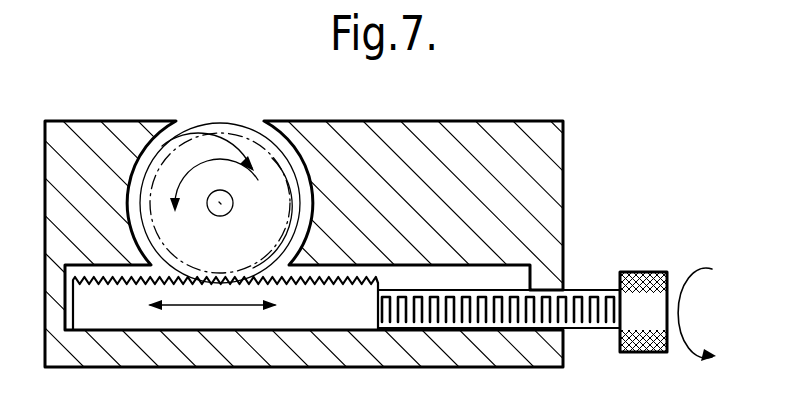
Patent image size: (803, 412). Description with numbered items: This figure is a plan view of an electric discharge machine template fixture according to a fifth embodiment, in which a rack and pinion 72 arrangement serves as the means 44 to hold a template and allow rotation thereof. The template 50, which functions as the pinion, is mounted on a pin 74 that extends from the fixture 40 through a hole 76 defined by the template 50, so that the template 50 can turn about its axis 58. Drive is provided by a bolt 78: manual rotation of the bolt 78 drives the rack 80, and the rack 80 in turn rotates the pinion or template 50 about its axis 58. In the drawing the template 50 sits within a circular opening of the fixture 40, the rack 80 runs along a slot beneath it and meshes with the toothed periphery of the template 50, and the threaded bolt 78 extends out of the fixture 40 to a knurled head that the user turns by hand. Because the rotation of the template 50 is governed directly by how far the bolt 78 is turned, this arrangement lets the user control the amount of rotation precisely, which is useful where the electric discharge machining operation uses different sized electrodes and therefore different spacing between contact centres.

The fixture 40 is at (401, 241).
The means to hold a template and allow rotation thereof 44 is at (401, 241).
The template 50 is at (167, 177).
The axis 58 is at (217, 216).
The rack and pinion 72 is at (337, 167).
The pin 74 is at (230, 202).
The hole 76 is at (222, 190).
The bolt 78 is at (640, 317).
The rack 80 is at (345, 326).